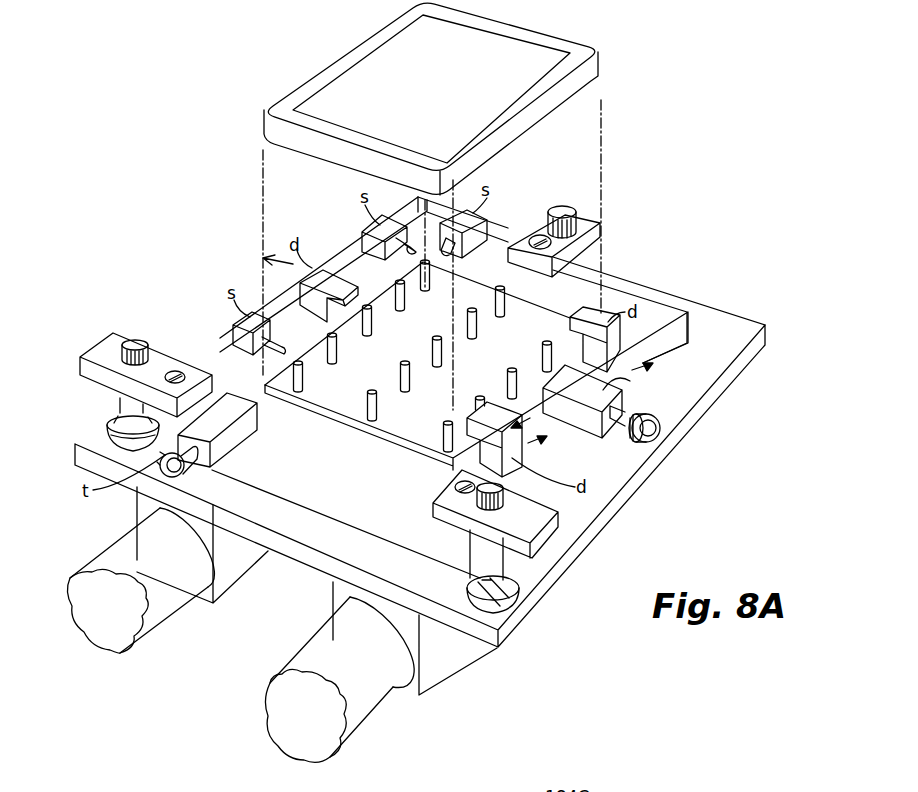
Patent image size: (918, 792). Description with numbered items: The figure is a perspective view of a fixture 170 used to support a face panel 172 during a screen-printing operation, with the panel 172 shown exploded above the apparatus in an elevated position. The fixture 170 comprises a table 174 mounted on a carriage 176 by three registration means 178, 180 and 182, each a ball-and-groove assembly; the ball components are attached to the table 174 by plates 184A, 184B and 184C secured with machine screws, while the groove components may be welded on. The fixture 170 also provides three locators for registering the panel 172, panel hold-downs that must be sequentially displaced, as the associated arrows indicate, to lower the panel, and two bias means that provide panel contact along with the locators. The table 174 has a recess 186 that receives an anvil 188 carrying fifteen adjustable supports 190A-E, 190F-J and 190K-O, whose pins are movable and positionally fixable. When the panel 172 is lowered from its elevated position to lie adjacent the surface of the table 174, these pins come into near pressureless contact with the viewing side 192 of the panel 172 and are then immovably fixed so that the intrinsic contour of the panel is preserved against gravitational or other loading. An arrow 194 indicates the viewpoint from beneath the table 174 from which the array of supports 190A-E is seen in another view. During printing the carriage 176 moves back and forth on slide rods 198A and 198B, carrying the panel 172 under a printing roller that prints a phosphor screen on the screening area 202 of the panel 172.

The fixture 170 is at (690, 332).
The face panel 172 is at (598, 70).
The table 174 is at (662, 310).
The carriage 176 is at (723, 388).
The registration means 178 is at (515, 600).
The registration means 180 is at (108, 427).
The registration means 182 is at (577, 258).
The plate 184A is at (552, 533).
The plate 184B is at (110, 348).
The plate 184C is at (527, 227).
The recess 186 is at (390, 317).
The anvil 188 is at (322, 365).
The adjustable supports 190K-O is at (287, 398).
The adjustable supports 190F-J is at (358, 423).
The adjustable supports 190A-E is at (430, 453).
The viewing side 192 is at (283, 147).
The arrow 194 is at (604, 447).
The slide rod 198A is at (148, 605).
The slide rod 198B is at (355, 720).
The screening area 202 is at (448, 102).